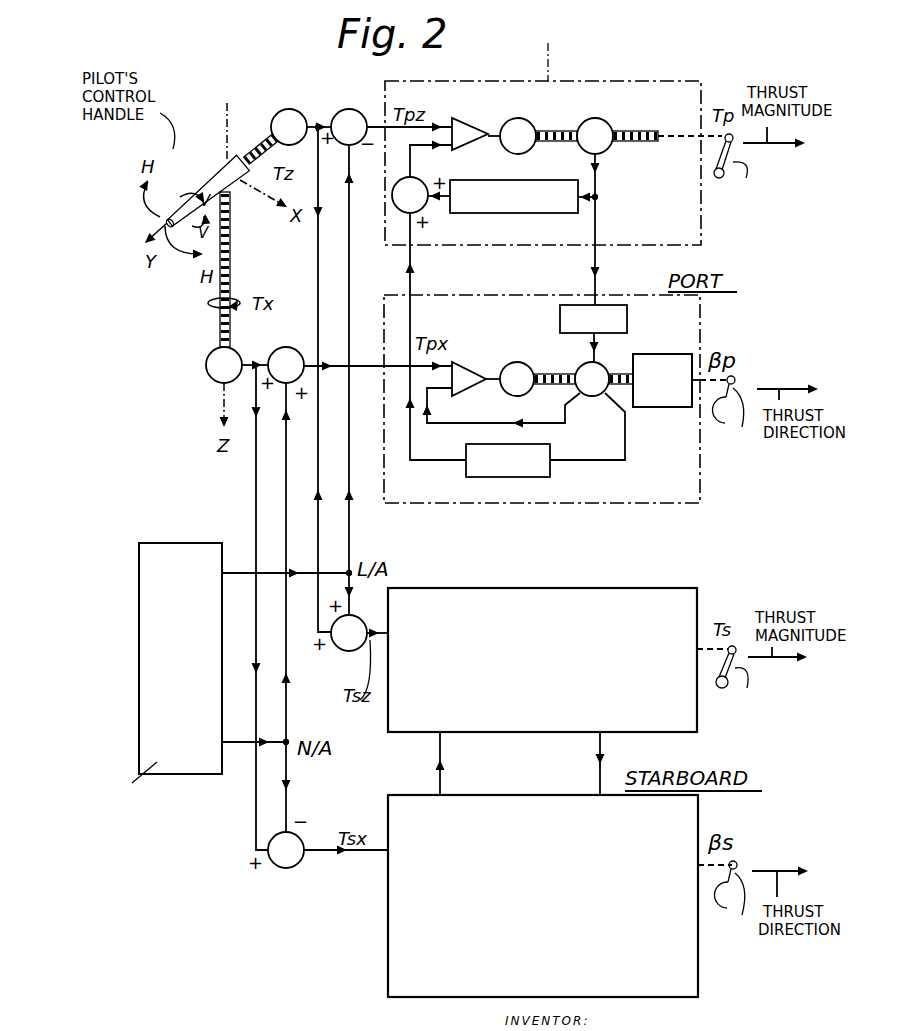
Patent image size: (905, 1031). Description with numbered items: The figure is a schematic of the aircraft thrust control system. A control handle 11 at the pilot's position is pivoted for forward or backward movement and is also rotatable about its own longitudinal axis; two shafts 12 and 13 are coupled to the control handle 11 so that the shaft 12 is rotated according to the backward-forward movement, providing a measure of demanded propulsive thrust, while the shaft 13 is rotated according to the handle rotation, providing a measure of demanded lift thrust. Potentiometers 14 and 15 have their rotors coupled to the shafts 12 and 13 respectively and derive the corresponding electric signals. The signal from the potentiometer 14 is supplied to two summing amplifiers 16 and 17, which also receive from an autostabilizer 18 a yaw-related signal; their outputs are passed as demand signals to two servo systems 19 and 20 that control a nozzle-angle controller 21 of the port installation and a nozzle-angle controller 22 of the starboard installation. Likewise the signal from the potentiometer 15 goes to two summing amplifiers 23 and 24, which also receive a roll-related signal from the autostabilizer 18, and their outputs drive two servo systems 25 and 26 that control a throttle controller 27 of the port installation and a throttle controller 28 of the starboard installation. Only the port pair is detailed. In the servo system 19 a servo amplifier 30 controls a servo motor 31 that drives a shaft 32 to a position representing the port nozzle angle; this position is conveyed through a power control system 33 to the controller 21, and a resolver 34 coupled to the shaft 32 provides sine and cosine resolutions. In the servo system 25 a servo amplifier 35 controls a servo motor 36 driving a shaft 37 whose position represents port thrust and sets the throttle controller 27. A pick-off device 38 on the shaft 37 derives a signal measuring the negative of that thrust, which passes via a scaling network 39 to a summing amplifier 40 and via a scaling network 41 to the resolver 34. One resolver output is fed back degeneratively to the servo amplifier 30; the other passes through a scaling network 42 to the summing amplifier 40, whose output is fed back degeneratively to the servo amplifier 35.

The control handle 11 is at (217, 162).
The shaft 12 is at (231, 274).
The shaft 13 is at (270, 140).
The potentiometer 14 is at (206, 365).
The potentiometer 15 is at (306, 102).
The summing amplifier 16 is at (290, 347).
The summing amplifier 17 is at (291, 866).
The autostabilizer 18 is at (197, 543).
The servo system 19 is at (600, 507).
The servo system 20 is at (699, 995).
The nozzle-angle controller 21 is at (742, 428).
The nozzle-angle controller 22 is at (741, 915).
The summing amplifier 23 is at (357, 102).
The summing amplifier 24 is at (338, 649).
The servo system 25 is at (569, 81).
The servo system 26 is at (513, 587).
The throttle controller 27 is at (746, 179).
The throttle controller 28 is at (747, 689).
The servo amplifier 30 is at (470, 347).
The servo motor 31 is at (531, 348).
The shaft 32 is at (622, 371).
The power control system 33 is at (671, 355).
The resolver 34 is at (585, 398).
The servo amplifier 35 is at (467, 118).
The servo motor 36 is at (531, 121).
The shaft 37 is at (656, 131).
The pick-off device 38 is at (604, 120).
The scaling network 39 is at (480, 214).
The summing amplifier 40 is at (428, 175).
The scaling network 41 is at (560, 315).
The scaling network 42 is at (550, 448).